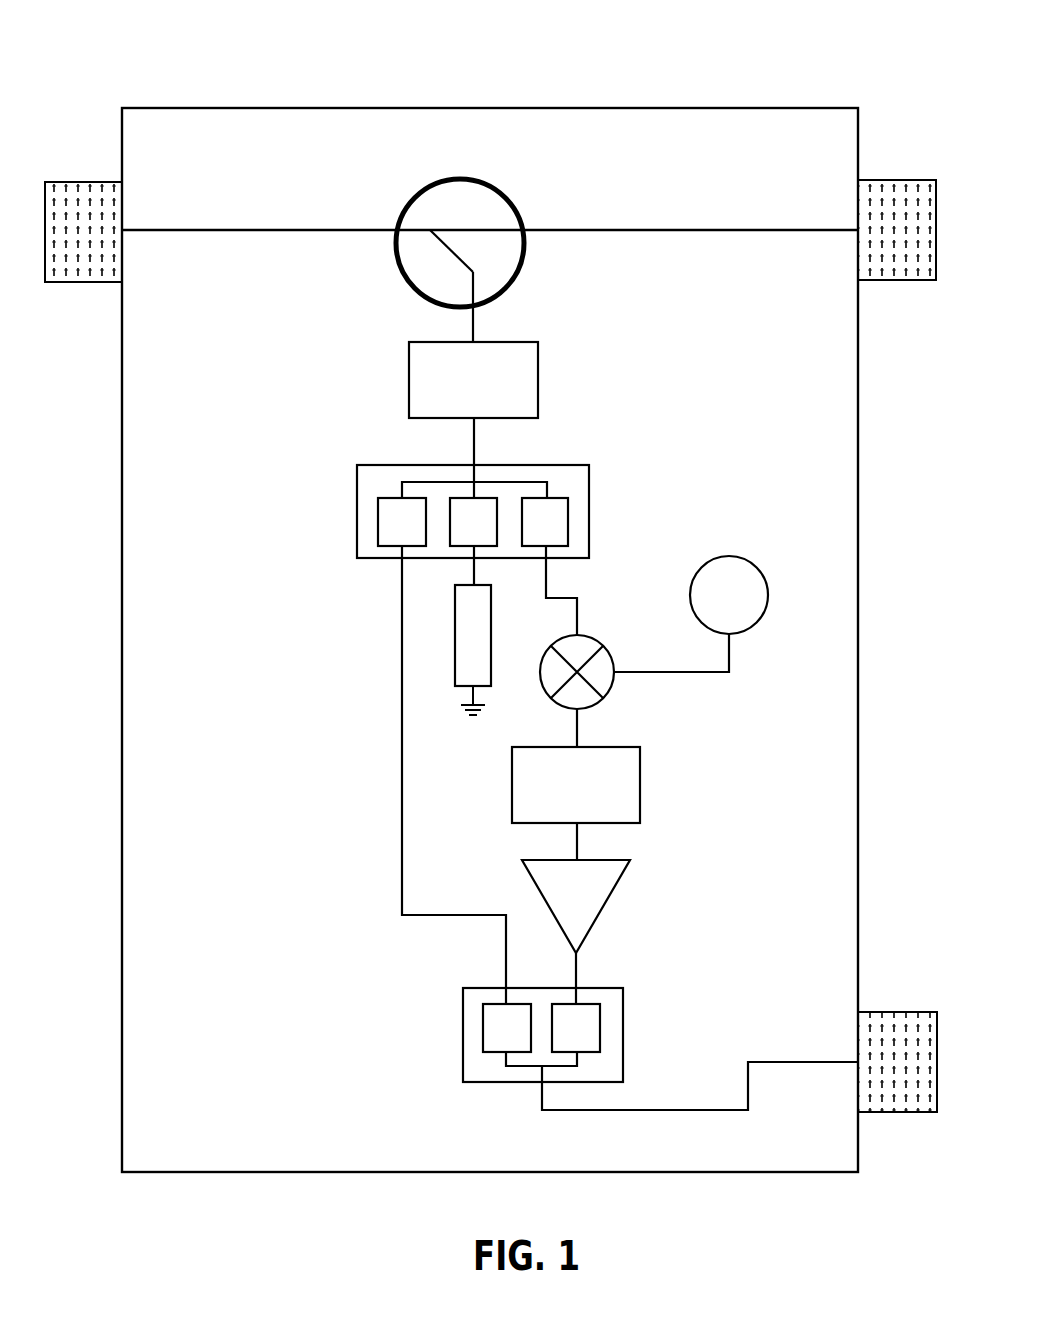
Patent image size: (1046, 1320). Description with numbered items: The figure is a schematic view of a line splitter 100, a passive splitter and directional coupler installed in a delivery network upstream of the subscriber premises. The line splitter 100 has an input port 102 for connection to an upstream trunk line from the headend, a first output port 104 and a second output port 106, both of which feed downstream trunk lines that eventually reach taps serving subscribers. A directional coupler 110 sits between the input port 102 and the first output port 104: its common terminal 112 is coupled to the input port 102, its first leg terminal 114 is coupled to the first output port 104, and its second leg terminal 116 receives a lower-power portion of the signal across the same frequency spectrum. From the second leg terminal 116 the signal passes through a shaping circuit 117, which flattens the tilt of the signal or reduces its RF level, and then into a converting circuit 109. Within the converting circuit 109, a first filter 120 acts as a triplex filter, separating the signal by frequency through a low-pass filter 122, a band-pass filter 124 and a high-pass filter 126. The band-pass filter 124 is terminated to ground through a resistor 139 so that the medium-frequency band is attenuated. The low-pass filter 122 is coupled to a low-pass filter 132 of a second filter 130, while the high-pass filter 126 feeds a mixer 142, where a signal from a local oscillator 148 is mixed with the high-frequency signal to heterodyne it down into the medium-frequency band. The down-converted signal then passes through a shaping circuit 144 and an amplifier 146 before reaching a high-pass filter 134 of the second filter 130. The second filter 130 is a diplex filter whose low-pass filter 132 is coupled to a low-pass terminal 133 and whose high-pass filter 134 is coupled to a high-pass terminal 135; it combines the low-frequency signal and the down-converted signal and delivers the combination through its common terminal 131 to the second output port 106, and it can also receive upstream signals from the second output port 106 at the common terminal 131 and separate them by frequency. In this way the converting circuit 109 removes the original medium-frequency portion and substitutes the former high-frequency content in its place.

The line splitter 100 is at (635, 108).
The input port 102 is at (92, 180).
The first output port 104 is at (882, 195).
The second output port 106 is at (905, 1104).
The converting circuit 109 is at (730, 482).
The directional coupler 110 is at (505, 194).
The common terminal 112 is at (395, 230).
The first leg terminal 114 is at (525, 232).
The second leg terminal 116 is at (490, 300).
The filter block 117 is at (409, 370).
The first filter 120 is at (589, 500).
The low-pass filter 122 is at (378, 532).
The band-pass filter 124 is at (489, 545).
The high-pass filter 126 is at (568, 520).
The second filter 130 is at (623, 996).
The common terminal 131 is at (538, 1083).
The low-pass filter 132 is at (497, 1015).
The low-pass terminal 133 is at (505, 988).
The high-pass filter 134 is at (600, 1040).
The high-pass terminal 135 is at (580, 1003).
The resistor 139 is at (491, 628).
The mixer 142 is at (607, 698).
The shaping circuit 144 is at (512, 797).
The amplifier 146 is at (620, 874).
The local oscillator 148 is at (768, 595).